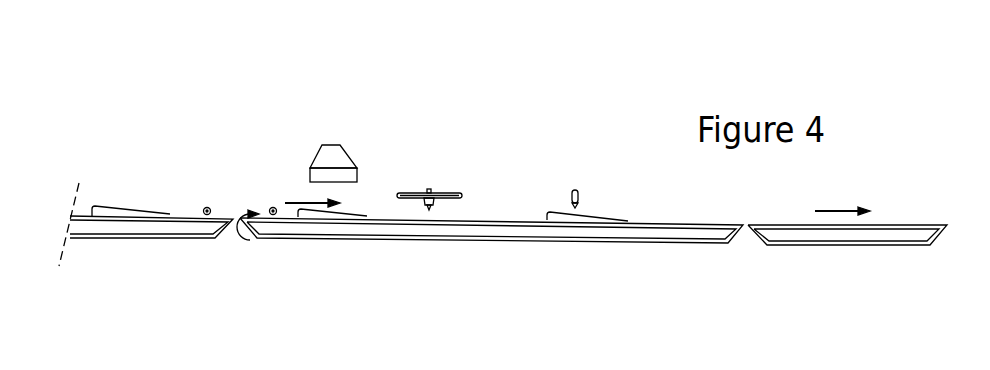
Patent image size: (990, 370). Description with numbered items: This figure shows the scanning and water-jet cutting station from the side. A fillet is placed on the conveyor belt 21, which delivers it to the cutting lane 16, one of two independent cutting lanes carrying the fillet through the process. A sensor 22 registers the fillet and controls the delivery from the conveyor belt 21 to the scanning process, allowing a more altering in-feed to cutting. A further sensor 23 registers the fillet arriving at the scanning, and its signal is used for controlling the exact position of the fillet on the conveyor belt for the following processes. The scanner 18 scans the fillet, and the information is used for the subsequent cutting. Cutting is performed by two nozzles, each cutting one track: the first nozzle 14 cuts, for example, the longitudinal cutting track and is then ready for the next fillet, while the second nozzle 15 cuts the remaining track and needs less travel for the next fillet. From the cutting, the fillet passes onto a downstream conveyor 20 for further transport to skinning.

The first nozzle 14 is at (432, 212).
The second nozzle 15 is at (575, 208).
The cutting lane 16 is at (122, 205).
The scanner 18 is at (332, 145).
The downstream tray 20 is at (848, 243).
The conveyor belt 21 is at (138, 236).
The sensor 22 is at (206, 207).
The sensor 23 is at (272, 207).